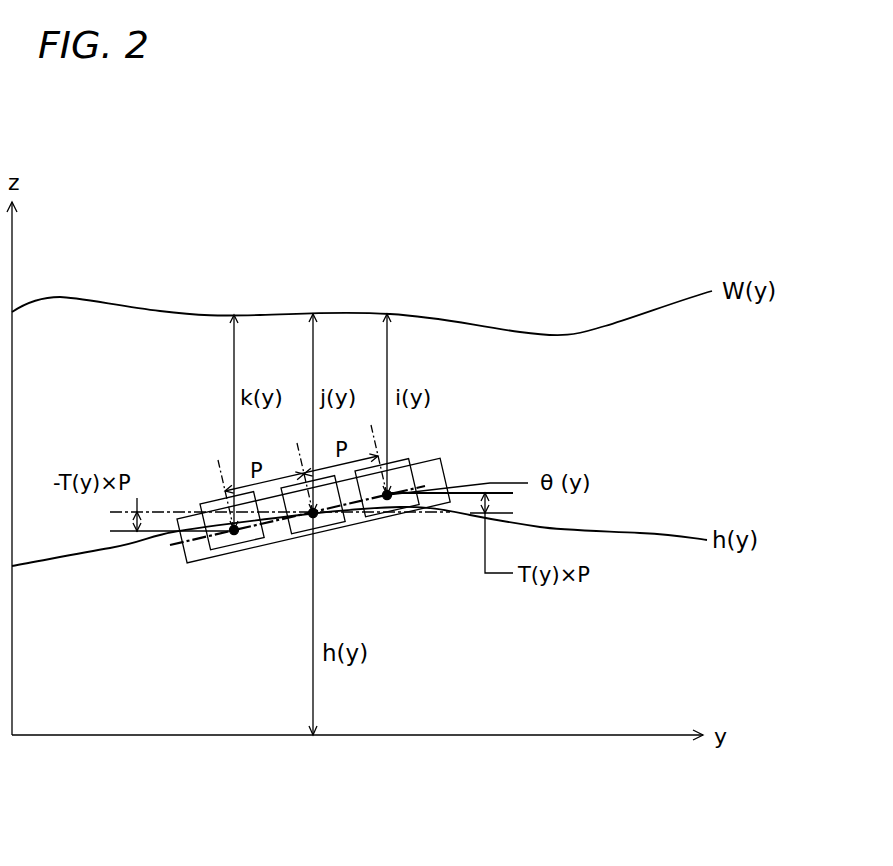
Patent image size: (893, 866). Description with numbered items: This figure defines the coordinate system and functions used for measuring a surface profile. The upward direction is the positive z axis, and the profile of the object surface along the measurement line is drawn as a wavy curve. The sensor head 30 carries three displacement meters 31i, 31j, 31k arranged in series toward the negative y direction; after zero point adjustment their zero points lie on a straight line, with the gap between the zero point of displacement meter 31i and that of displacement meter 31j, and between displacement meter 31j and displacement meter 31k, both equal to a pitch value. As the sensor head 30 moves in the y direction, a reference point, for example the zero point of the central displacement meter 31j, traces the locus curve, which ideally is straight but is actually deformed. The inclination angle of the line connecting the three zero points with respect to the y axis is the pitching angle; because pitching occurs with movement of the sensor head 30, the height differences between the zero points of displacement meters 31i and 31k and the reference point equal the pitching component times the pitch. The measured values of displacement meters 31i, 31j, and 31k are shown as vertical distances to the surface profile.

The sensor head 30 is at (364, 485).
The displacement meter 31i is at (452, 450).
The displacement meter 31j is at (247, 551).
The displacement meter 31k is at (183, 546).